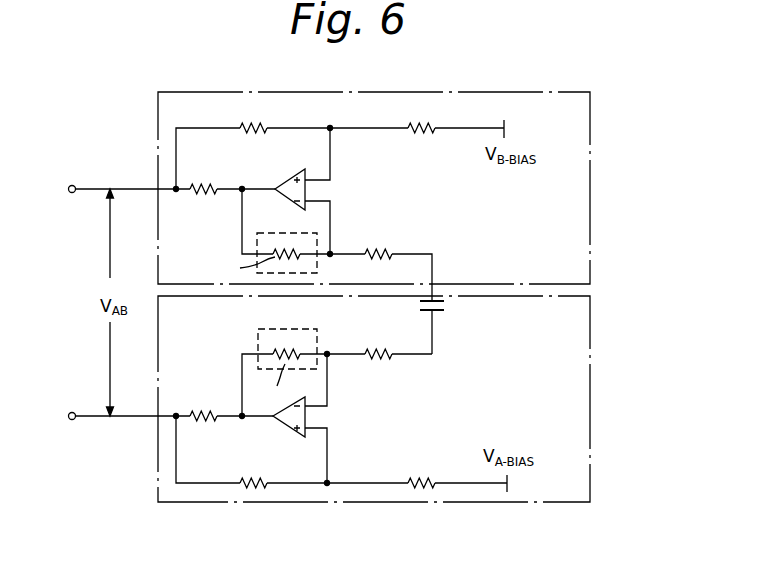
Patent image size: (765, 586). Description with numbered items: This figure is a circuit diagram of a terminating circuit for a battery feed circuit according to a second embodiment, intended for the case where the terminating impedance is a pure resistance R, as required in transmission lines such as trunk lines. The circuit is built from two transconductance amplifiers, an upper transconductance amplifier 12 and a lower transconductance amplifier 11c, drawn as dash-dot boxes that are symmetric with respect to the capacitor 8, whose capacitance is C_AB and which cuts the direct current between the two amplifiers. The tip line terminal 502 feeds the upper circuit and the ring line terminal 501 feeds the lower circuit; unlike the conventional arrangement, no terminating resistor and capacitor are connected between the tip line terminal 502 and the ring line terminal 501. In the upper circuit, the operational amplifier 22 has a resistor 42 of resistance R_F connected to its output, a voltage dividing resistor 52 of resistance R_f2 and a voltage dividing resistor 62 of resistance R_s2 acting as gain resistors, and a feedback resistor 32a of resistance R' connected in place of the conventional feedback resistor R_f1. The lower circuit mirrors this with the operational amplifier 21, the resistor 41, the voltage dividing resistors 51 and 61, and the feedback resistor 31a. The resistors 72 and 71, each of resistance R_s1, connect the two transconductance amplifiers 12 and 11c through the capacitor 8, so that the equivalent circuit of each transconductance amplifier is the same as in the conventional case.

The transconductance amplifier 12 is at (590, 172).
The transconductance amplifier 11c is at (403, 399).
The tip line terminal 502 is at (72, 193).
The ring line terminal 501 is at (72, 420).
The resistor 42 is at (198, 195).
The resistor 41 is at (198, 422).
The voltage dividing resistor 52 is at (251, 133).
The voltage dividing resistor 51 is at (244, 487).
The voltage dividing resistor 62 is at (420, 134).
The voltage dividing resistor 61 is at (421, 489).
The operational amplifier 22 is at (297, 170).
The operational amplifier 21 is at (312, 418).
The feedback resistor 32a is at (336, 232).
The feedback resistor 31a is at (297, 327).
The resistor 72 is at (390, 258).
The resistor 71 is at (390, 360).
The capacitor 8 is at (446, 305).